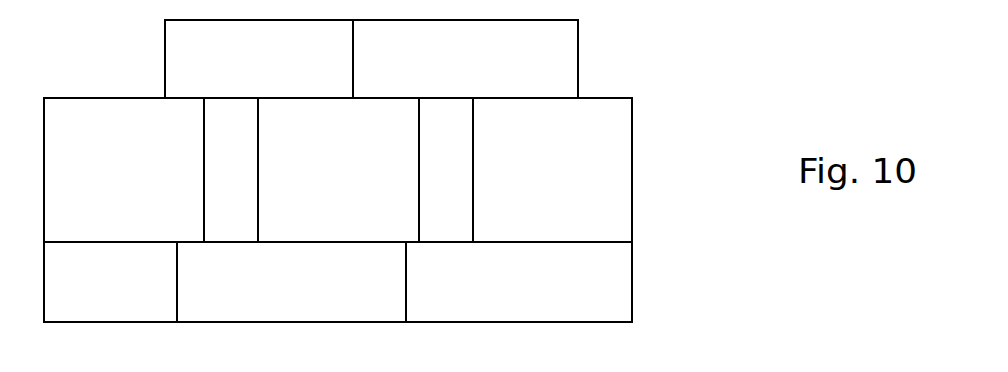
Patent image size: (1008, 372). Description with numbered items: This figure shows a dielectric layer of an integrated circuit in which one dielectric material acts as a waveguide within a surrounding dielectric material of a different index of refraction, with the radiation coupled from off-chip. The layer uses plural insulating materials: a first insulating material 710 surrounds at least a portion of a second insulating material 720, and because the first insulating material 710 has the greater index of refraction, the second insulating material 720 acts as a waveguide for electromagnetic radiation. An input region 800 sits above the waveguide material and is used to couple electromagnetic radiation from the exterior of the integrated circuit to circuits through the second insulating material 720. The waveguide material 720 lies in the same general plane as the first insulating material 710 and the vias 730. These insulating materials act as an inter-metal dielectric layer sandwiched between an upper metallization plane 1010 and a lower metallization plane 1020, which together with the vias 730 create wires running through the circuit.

The metallization plane 1010 is at (259, 59).
The input region 800 is at (465, 59).
The first insulating material 710 is at (338, 170).
The vias 730 is at (231, 170).
The second insulating material 720 is at (446, 170).
The metallization plane 1020 is at (338, 282).